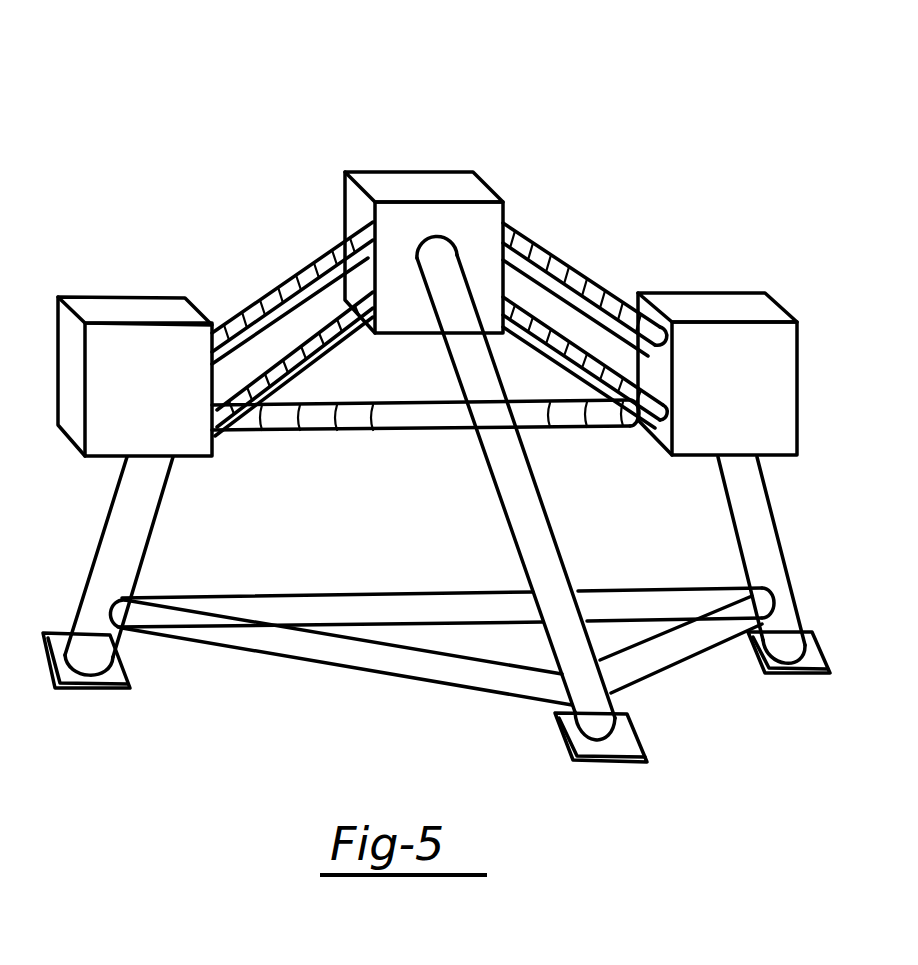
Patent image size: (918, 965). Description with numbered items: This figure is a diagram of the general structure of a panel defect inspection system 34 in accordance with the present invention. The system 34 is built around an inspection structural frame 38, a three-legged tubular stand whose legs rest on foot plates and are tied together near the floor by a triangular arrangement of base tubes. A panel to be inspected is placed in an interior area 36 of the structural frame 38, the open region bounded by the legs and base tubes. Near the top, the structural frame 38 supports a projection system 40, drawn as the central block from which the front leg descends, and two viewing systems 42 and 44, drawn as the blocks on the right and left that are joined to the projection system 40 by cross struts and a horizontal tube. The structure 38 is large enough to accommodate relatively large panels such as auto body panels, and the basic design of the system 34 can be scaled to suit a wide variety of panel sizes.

The system 34 is at (234, 118).
The interior area 36 is at (492, 632).
The inspection structural frame 38 is at (538, 240).
The projection system 40 is at (425, 172).
The viewing system 42 is at (713, 292).
The viewing system 44 is at (120, 292).